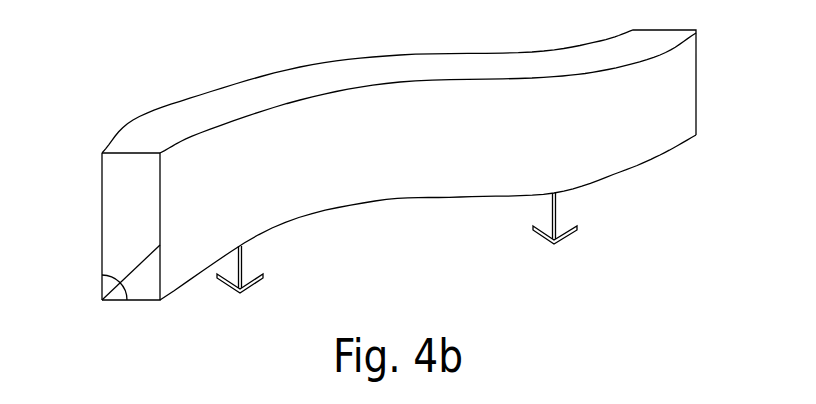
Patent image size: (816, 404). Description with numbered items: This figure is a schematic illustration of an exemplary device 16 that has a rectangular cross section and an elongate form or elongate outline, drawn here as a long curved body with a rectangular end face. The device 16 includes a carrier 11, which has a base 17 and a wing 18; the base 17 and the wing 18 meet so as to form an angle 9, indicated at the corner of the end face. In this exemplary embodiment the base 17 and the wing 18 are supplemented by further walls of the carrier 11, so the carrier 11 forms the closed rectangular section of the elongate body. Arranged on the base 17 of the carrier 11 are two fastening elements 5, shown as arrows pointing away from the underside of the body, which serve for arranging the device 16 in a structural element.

The device 16 is at (128, 111).
The wing 18 is at (100, 178).
The angle 9 is at (101, 284).
The base 17 is at (144, 291).
The carrier 11 is at (415, 182).
The fastening element 5 is at (254, 284).